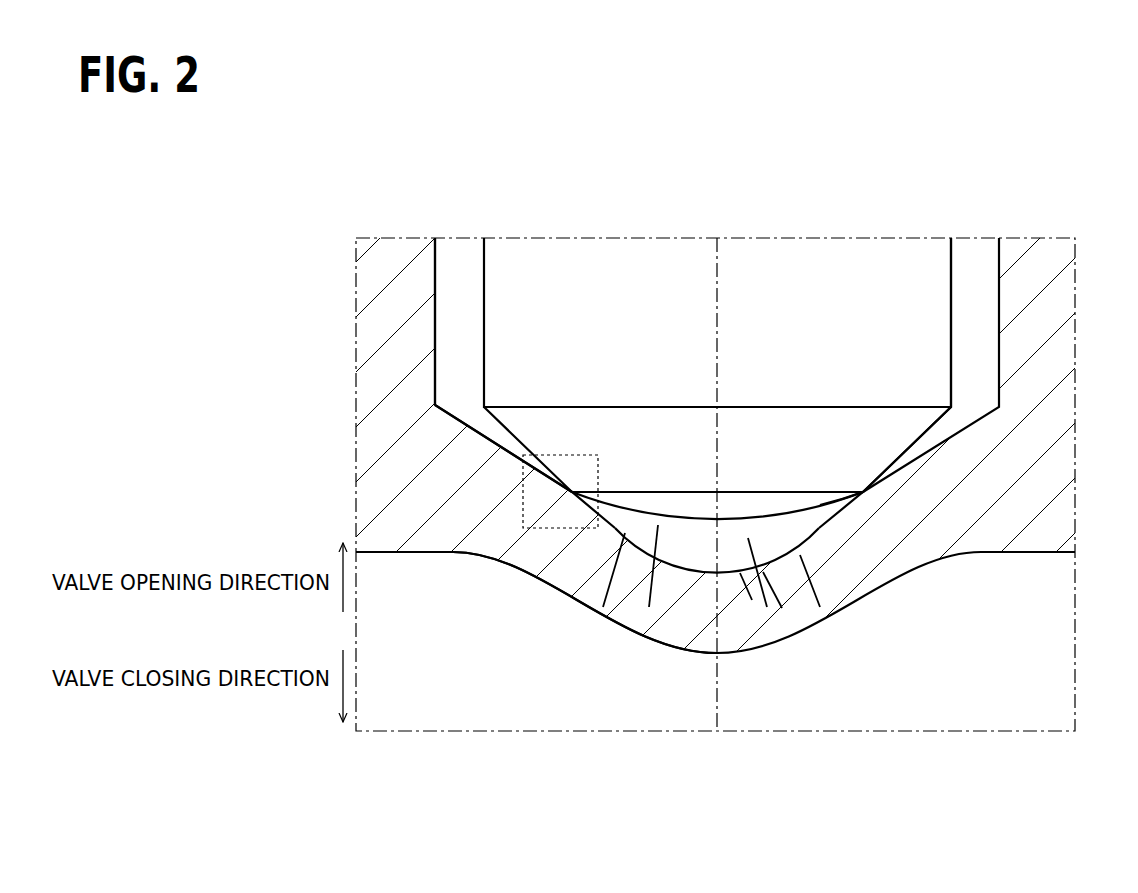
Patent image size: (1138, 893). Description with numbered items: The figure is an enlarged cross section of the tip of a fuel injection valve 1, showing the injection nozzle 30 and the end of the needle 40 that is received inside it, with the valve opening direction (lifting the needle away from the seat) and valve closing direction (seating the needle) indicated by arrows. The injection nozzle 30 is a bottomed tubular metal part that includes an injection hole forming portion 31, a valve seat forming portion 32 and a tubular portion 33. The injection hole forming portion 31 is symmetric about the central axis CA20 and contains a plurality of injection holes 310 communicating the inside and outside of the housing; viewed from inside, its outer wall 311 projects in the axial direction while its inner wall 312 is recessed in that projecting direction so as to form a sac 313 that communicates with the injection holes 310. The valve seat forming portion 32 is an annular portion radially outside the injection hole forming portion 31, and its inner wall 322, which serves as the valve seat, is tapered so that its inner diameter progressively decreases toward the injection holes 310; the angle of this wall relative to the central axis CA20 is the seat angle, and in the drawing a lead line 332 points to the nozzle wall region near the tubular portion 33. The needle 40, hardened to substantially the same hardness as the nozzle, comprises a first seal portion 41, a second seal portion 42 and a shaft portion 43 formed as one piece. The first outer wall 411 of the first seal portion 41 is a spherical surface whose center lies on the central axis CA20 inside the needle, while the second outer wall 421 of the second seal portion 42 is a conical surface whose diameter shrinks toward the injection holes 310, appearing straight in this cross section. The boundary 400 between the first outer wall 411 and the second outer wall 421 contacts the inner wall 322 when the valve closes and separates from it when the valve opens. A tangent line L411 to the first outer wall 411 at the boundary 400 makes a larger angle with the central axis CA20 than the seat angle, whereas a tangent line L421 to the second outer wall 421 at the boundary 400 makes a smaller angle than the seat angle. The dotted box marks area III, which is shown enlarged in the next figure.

The fuel injection valve 1 is at (1053, 220).
The injection nozzle 30 is at (505, 573).
The injection hole forming portion 31 is at (692, 630).
The injection holes 310 is at (607, 613).
The outer wall 311 is at (847, 623).
The inner wall 312 is at (750, 600).
The sac 313 is at (770, 600).
The valve seat forming portion 32 is at (497, 535).
The inner wall 322 is at (512, 455).
The tubular portion 33 is at (377, 325).
The wall corner portion 332 is at (437, 378).
The needle 40 is at (957, 266).
The boundary 400 is at (603, 530).
The first seal portion 41 is at (815, 522).
The first outer wall 411 is at (650, 600).
The second seal portion 42 is at (845, 537).
The second outer wall 421 is at (820, 514).
The shaft portion 43 is at (933, 330).
The central axis CA20 is at (717, 262).
The tangent line L411 is at (660, 530).
The tangent line L421 is at (705, 535).
The area III is at (545, 530).